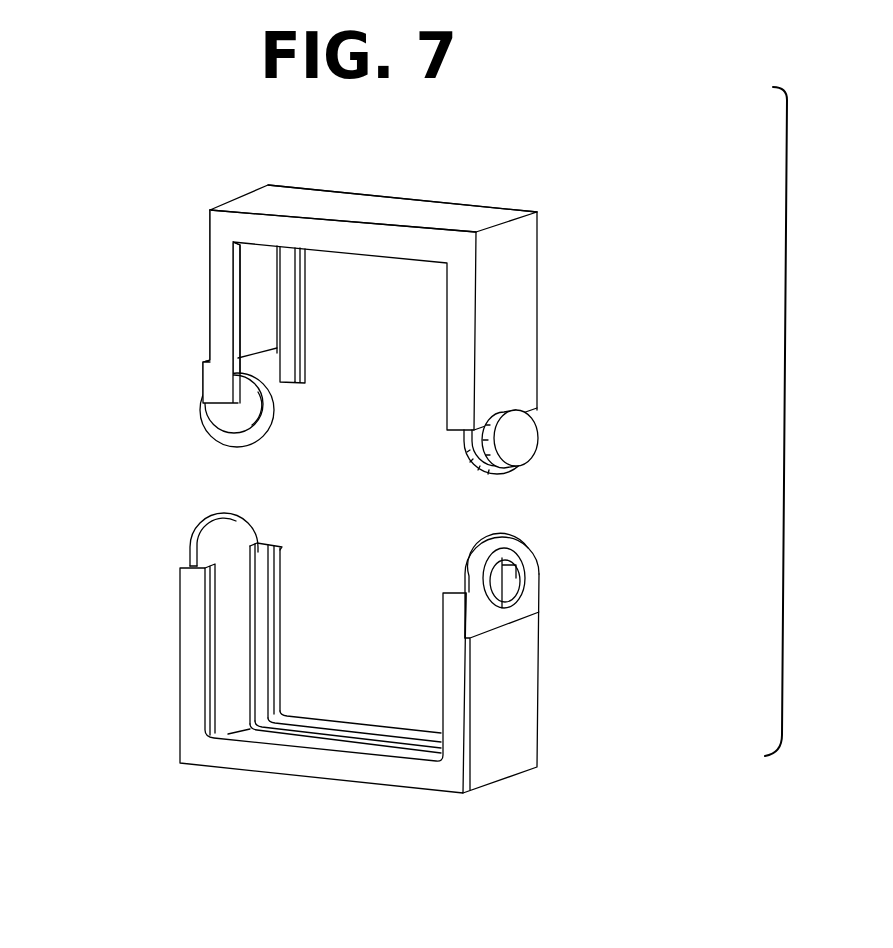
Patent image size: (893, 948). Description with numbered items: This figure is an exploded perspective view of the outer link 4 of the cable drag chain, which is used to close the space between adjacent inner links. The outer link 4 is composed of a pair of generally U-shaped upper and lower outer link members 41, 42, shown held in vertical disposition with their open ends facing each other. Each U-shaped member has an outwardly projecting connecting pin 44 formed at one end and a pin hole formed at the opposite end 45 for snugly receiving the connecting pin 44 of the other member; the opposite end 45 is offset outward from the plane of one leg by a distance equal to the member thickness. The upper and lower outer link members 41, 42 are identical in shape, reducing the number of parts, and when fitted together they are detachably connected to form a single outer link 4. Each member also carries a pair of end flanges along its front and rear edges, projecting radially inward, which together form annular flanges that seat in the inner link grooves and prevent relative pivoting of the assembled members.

The outer link 4 is at (572, 217).
The upper outer link member 41 is at (517, 313).
The lower outer link member 42 is at (518, 712).
The connecting pin 44 is at (525, 440).
The opposite end 45 is at (212, 372).